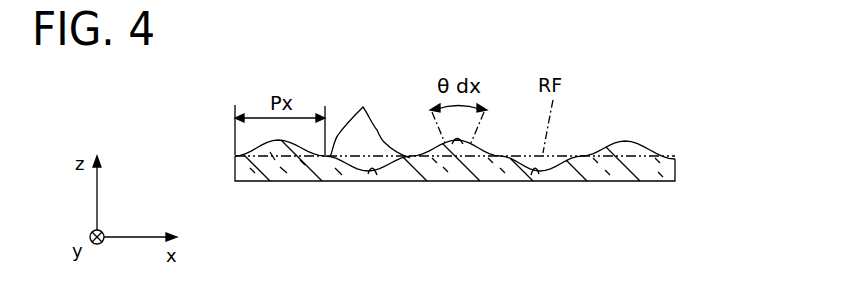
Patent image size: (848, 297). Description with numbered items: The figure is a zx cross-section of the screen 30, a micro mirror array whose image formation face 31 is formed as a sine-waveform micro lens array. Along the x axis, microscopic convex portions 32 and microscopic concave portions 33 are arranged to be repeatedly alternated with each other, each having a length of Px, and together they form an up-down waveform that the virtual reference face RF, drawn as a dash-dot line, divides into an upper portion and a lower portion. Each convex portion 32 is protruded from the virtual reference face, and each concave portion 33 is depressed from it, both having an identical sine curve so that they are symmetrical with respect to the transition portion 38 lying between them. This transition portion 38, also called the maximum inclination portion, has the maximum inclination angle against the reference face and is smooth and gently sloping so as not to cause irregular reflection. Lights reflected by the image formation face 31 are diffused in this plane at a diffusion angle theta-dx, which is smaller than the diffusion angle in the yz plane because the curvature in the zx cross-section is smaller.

The screen 30 is at (675, 175).
The image formation face 31 is at (627, 142).
The convex portion 32 is at (463, 144).
The concave portion 33 is at (377, 175).
The transition portion 38 is at (363, 107).